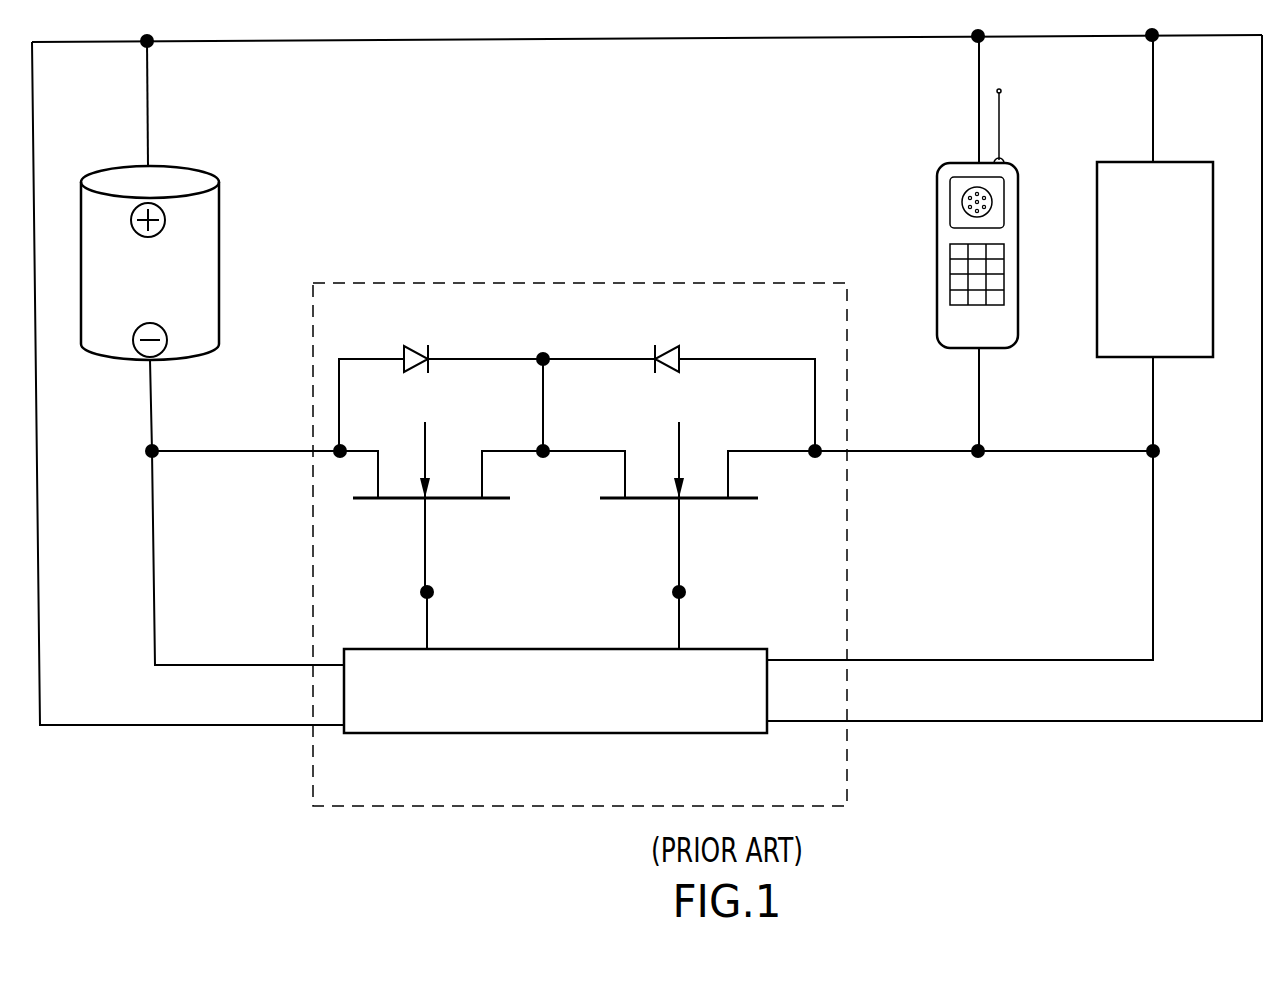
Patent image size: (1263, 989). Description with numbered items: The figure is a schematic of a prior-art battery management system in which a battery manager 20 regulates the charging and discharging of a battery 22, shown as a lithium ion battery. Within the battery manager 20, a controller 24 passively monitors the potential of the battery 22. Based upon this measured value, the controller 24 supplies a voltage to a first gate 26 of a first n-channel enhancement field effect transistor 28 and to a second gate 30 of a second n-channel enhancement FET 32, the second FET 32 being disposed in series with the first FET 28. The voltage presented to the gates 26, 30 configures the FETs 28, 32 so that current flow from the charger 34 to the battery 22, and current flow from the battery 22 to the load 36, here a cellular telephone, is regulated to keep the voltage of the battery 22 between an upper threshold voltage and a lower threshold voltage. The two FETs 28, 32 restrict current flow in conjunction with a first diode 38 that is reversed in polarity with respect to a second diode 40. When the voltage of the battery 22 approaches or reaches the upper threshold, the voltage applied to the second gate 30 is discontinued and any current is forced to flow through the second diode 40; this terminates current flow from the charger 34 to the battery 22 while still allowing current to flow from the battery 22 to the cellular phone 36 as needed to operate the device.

The battery manager 20 is at (463, 283).
The battery 22 is at (205, 220).
The controller 24 is at (372, 665).
The first gate 26 is at (430, 593).
The first n-channel enhancement Field Effect Transistor 28 is at (457, 502).
The second gate 30 is at (683, 591).
The second n-channel enhancement FET 32 is at (712, 498).
The charger 34 is at (1123, 162).
The load 36 is at (998, 340).
The first diode 38 is at (410, 353).
The second diode 40 is at (660, 352).